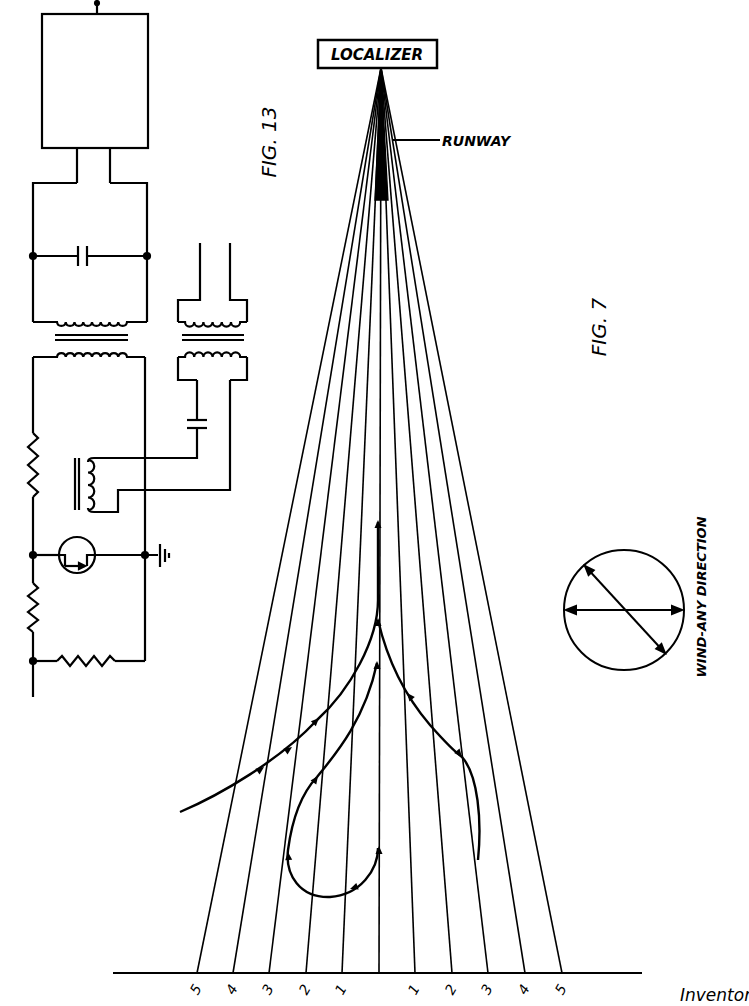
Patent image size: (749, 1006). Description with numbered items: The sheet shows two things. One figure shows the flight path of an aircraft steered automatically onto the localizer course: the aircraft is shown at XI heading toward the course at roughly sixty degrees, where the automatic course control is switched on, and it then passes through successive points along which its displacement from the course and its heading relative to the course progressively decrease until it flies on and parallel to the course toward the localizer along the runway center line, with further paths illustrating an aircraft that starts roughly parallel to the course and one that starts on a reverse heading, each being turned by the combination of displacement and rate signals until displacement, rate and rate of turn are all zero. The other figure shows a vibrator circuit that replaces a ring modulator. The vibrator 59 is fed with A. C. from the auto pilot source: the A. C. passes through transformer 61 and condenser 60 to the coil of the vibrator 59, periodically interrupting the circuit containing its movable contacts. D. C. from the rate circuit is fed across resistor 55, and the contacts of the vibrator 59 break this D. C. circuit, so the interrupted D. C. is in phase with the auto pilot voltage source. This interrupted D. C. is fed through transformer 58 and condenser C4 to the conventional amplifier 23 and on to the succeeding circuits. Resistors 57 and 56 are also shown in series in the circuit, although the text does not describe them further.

In FIG. 13, the amplifier 23 is at (40, 75).
In FIG. 13, the condenser C4 is at (87, 252).
In FIG. 13, the transformer 58 is at (52, 353).
In FIG. 13, the resistor 57 is at (30, 466).
In FIG. 13, the vibrator 59 is at (67, 538).
In FIG. 13, the resistor 56 is at (30, 614).
In FIG. 13, the resistor 55 is at (90, 655).
In FIG. 13, the condenser 60 is at (189, 425).
In FIG. 13, the transformer 61 is at (250, 334).
In FIG. 7, the aircraft XI is at (322, 710).